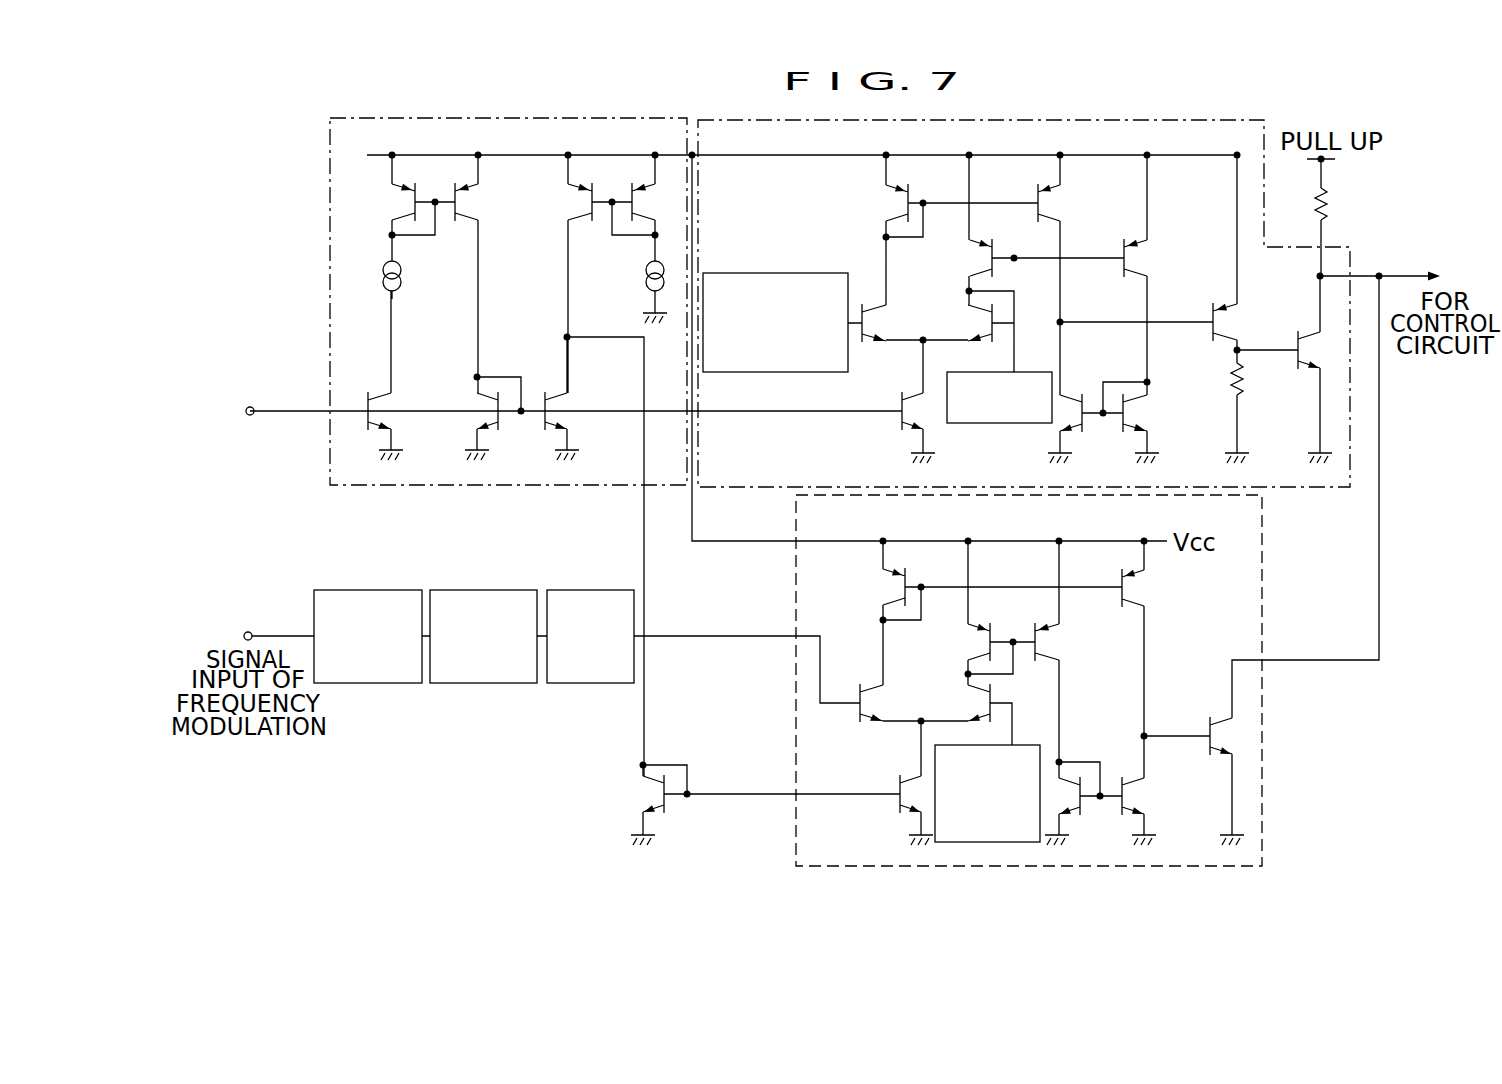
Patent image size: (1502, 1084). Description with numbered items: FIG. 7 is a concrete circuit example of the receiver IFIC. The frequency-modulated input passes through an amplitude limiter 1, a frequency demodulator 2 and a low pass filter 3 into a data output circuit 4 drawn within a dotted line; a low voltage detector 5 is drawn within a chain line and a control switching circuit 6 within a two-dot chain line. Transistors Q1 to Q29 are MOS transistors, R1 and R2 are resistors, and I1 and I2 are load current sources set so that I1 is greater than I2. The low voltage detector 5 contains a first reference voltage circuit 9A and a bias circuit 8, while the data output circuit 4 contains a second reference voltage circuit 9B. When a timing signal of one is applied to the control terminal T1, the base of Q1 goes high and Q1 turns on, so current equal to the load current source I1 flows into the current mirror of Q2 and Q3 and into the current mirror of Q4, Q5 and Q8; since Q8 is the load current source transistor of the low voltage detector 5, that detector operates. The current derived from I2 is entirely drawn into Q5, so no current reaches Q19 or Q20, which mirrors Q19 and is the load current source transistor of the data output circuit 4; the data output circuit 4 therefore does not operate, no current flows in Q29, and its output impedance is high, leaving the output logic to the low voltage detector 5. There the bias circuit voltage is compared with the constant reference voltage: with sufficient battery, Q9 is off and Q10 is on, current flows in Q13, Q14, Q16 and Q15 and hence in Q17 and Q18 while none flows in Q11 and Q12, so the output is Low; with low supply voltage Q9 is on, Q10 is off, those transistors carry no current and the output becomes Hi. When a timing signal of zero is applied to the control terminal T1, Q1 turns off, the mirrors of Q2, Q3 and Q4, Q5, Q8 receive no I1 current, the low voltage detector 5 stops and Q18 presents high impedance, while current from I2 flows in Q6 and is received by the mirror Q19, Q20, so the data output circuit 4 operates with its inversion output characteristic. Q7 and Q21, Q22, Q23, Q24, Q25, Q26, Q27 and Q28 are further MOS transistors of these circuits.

The amplitude limiter 1 is at (369, 590).
The frequency demodulator 2 is at (484, 590).
The low pass filter 3 is at (589, 590).
The data output circuit 4 is at (1265, 572).
The low voltage detector 5 is at (1045, 118).
The control switching circuit 6 is at (480, 118).
The bias circuit 8 is at (1003, 425).
The first reference voltage circuit 9A is at (786, 272).
The second reference voltage circuit 9B is at (1027, 742).
The control terminal T1 is at (251, 405).
The load current source I1 is at (408, 260).
The load current source I2 is at (627, 260).
The resistor R1 is at (1232, 368).
The resistor R2 is at (1330, 208).
The MOS transistor Q1 is at (385, 405).
The MOS transistor Q2 is at (406, 204).
The MOS transistor Q3 is at (470, 208).
The MOS transistor Q4 is at (480, 423).
The MOS transistor Q5 is at (540, 434).
The MOS transistor Q6 is at (578, 214).
The MOS transistor Q7 is at (636, 209).
The MOS transistor Q8 is at (898, 400).
The MOS transistor Q9 is at (870, 322).
The MOS transistor Q10 is at (995, 312).
The MOS transistor Q11 is at (892, 204).
The MOS transistor Q12 is at (1056, 215).
The MOS transistor Q13 is at (984, 262).
The MOS transistor Q14 is at (1140, 266).
The MOS transistor Q15 is at (1086, 392).
The MOS transistor Q16 is at (1142, 420).
The MOS transistor Q17 is at (1226, 330).
The MOS transistor Q18 is at (1296, 372).
The MOS transistor Q19 is at (654, 795).
The MOS transistor Q20 is at (898, 782).
The MOS transistor Q21 is at (861, 690).
The MOS transistor Q22 is at (978, 710).
The MOS transistor Q23 is at (892, 589).
The MOS transistor Q24 is at (1140, 592).
The MOS transistor Q25 is at (978, 652).
The MOS transistor Q26 is at (1053, 645).
The MOS transistor Q27 is at (1086, 816).
The MOS transistor Q28 is at (1140, 800).
The MOS transistor Q29 is at (1205, 721).